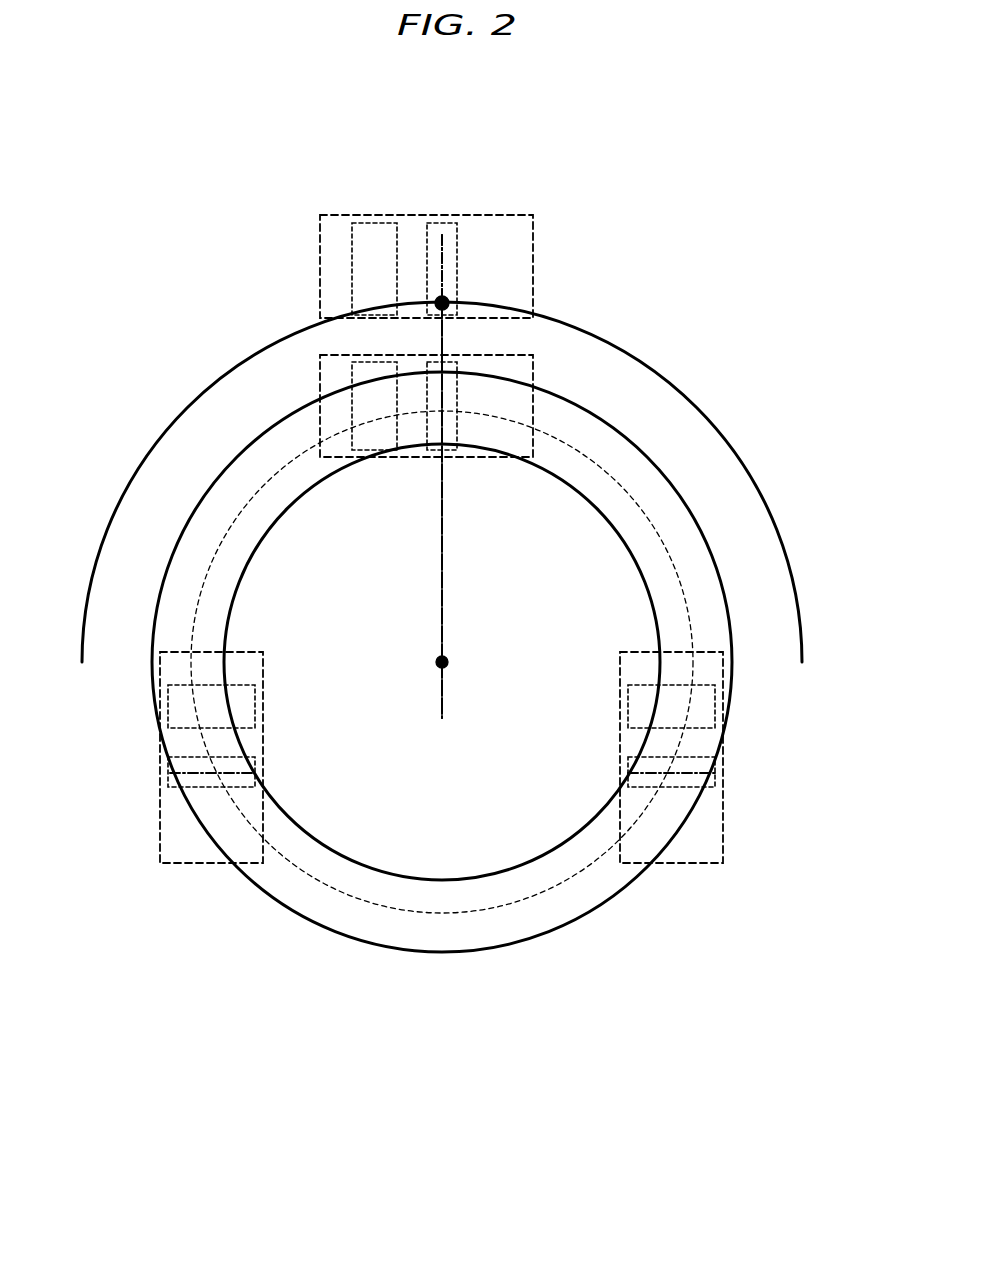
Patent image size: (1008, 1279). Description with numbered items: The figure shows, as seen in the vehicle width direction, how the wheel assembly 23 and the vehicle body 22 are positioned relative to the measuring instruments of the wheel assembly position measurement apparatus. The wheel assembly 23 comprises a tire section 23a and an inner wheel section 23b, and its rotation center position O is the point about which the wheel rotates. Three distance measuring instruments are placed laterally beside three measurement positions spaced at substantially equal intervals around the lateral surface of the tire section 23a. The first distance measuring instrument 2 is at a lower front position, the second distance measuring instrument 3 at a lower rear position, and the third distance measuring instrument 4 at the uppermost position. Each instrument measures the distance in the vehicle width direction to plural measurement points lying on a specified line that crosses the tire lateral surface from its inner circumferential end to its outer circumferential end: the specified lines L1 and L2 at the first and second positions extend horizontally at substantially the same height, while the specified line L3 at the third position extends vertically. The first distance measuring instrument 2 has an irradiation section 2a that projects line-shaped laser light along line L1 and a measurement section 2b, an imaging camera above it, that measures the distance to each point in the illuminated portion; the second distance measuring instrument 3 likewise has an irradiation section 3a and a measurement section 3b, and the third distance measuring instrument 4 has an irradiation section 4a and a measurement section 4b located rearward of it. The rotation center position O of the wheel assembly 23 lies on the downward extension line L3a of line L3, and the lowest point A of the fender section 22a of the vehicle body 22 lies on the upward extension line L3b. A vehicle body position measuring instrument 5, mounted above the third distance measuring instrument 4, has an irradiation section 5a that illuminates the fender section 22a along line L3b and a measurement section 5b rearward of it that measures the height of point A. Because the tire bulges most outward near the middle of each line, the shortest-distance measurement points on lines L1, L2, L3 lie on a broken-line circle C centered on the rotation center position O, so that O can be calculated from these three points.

The first distance measuring instrument 2 is at (725, 810).
The irradiation section 2a is at (683, 790).
The measurement section 2b is at (640, 685).
The second distance measuring instrument 3 is at (160, 830).
The irradiation section 3a is at (220, 790).
The measurement section 3b is at (238, 685).
The third distance measuring instrument 4 is at (320, 378).
The irradiation section 4a is at (424, 430).
The measurement section 4b is at (360, 430).
The vehicle body position measuring instrument 5 is at (318, 266).
The irradiation section 5a is at (430, 245).
The measurement section 5b is at (355, 245).
The vehicle body 22 is at (461, 482).
The fender section 22a is at (665, 355).
The wheel assembly 23 is at (442, 733).
The tire section 23a is at (430, 940).
The wheel section 23b is at (503, 843).
The lowest point A is at (445, 300).
The circle C is at (627, 483).
The rotation center position O is at (459, 662).
The specified line L1 is at (695, 763).
The specified line L2 is at (172, 760).
The specified line L3 is at (455, 385).
The downward extension line L3a is at (442, 575).
The upward extension line L3b is at (448, 257).